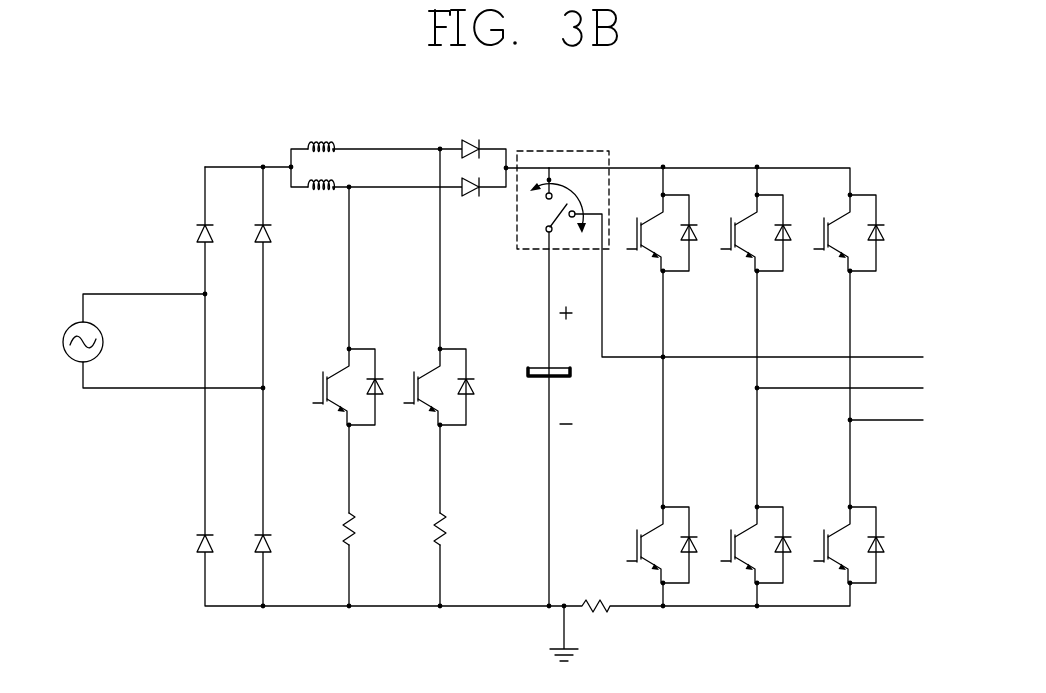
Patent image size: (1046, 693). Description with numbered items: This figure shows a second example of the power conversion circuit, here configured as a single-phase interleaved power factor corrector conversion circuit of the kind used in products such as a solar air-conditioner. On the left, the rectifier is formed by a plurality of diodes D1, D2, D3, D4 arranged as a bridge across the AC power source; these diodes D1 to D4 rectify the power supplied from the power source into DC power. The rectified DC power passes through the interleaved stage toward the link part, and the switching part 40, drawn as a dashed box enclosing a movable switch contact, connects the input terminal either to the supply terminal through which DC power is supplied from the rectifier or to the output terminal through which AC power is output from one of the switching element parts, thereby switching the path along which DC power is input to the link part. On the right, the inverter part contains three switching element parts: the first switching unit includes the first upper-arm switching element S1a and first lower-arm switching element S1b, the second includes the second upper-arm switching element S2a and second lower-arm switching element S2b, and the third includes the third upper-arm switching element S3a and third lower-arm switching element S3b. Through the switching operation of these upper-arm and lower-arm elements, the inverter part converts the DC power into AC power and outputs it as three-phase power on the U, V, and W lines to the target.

The switching part 40 is at (565, 148).
The diode D1 is at (193, 234).
The diode D2 is at (251, 234).
The diode D3 is at (193, 544).
The diode D4 is at (251, 544).
The first upper-arm switching element S1a is at (662, 229).
The second upper-arm switching element S2a is at (756, 229).
The third upper-arm switching element S3a is at (849, 229).
The first lower-arm switching element S1b is at (662, 541).
The second lower-arm switching element S2b is at (756, 541).
The third lower-arm switching element S3b is at (849, 541).
The U phase U is at (802, 357).
The V phase V is at (848, 388).
The W phase W is at (897, 420).